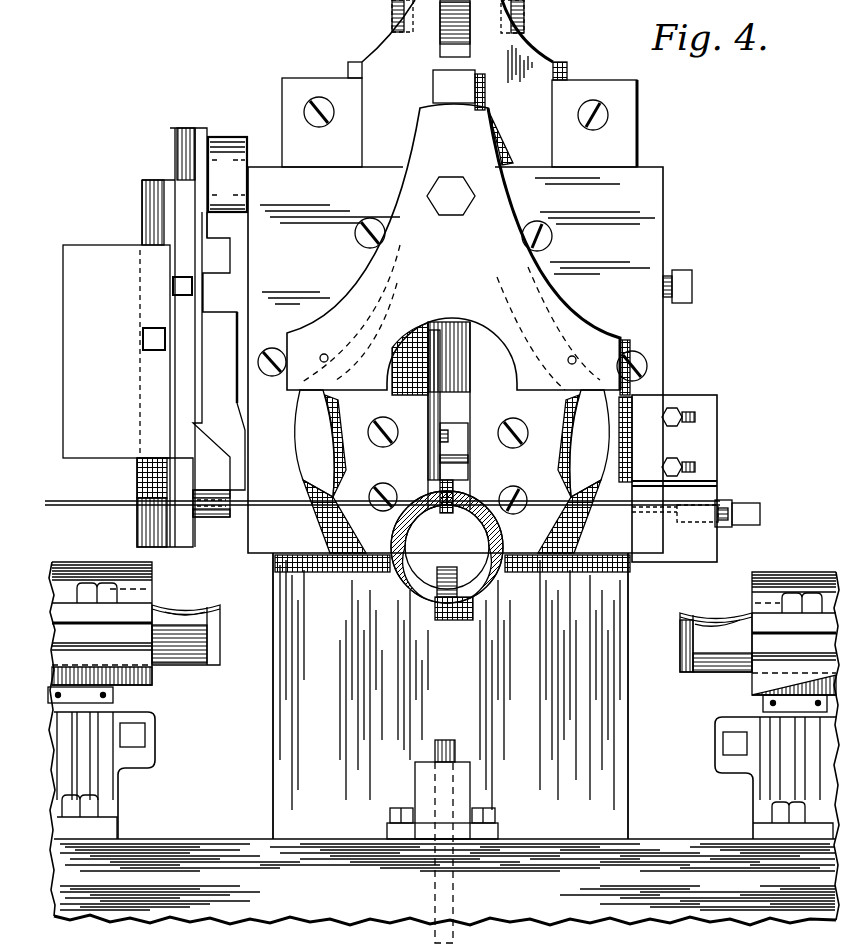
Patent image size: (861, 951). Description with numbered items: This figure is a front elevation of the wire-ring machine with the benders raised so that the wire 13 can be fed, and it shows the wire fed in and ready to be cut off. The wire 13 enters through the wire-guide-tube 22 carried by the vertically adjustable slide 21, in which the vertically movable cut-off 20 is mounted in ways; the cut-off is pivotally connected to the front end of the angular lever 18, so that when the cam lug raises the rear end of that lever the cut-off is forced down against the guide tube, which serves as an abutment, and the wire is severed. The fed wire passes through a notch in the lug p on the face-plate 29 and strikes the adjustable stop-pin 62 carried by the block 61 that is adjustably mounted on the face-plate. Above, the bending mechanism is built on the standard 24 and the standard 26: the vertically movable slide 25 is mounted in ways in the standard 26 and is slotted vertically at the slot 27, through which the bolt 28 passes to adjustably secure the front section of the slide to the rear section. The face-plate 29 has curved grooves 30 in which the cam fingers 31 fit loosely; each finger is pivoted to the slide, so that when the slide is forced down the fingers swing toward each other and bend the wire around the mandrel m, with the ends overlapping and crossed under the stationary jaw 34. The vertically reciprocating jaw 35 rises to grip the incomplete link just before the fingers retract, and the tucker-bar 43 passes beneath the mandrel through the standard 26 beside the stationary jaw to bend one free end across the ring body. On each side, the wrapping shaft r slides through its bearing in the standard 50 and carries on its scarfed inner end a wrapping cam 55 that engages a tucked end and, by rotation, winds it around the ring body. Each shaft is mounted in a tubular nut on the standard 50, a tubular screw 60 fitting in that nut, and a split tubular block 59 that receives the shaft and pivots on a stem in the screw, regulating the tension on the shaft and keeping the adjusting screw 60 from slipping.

The wire 13 is at (382, 494).
The angular lever 18 is at (227, 174).
The cut-off 20 is at (193, 335).
The vertically adjustable slide 21 is at (135, 337).
The wire-guide-tube 22 is at (211, 516).
The standard 24 is at (455, 28).
The vertically movable slide 25 is at (459, 83).
The standard 26 is at (450, 696).
The slot 27 is at (459, 90).
The bolt 28 is at (453, 249).
The face-plate 29 is at (470, 369).
The curved grooves 30 is at (452, 547).
The cam fingers 31 is at (452, 443).
The stationary jaw 34 is at (457, 580).
The vertically reciprocating jaw 35 is at (442, 831).
The tucker-bar 43 is at (473, 620).
The standard 50 is at (445, 775).
The wrapping cam 55 is at (452, 638).
The tubular block 59 is at (444, 628).
The tubular screw 60 is at (437, 700).
The block 61 is at (675, 478).
The stop-pin 62 is at (739, 503).
The mandrel m is at (447, 547).
The lug p is at (463, 485).
The wrapping shaft r is at (452, 615).